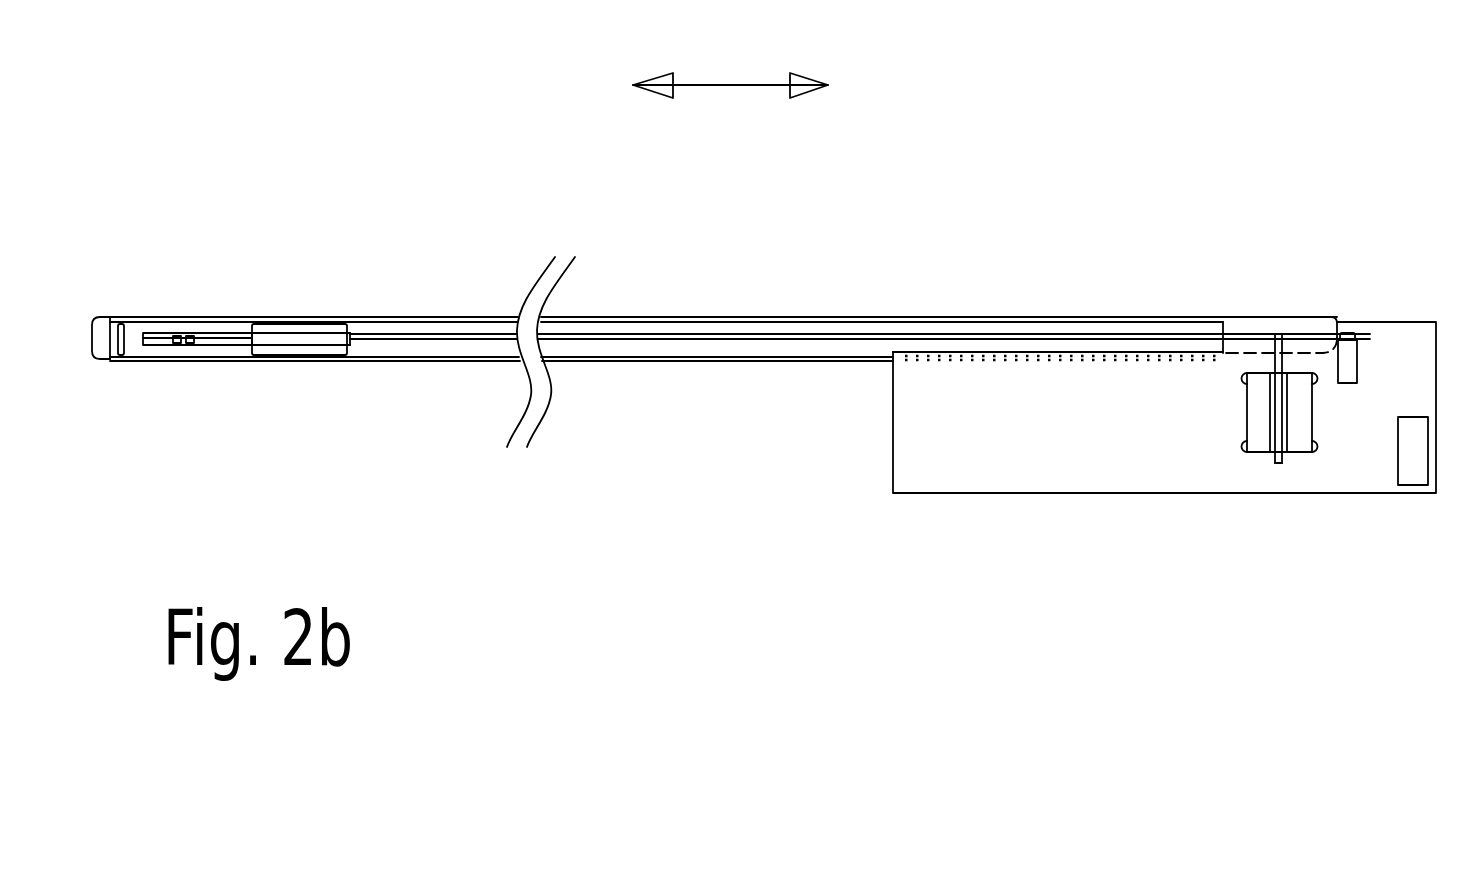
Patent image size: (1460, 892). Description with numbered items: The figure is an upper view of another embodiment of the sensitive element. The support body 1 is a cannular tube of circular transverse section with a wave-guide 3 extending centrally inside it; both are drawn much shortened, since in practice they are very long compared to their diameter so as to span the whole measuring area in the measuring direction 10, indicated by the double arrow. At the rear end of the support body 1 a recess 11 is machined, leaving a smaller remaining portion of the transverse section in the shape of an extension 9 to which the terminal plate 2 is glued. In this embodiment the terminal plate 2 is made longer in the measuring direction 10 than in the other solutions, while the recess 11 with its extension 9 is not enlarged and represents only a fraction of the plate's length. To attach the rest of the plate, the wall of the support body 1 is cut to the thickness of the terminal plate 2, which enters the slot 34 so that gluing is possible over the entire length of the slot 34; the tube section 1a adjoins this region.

The measuring direction 10 is at (719, 83).
The support body 1 is at (683, 318).
The proximal tube section 1a is at (990, 318).
The wave-guide 3 is at (778, 334).
The extension 9 is at (1305, 317).
The recess 11 is at (1245, 332).
The slot 34 is at (972, 357).
The terminal plate 2 is at (975, 474).